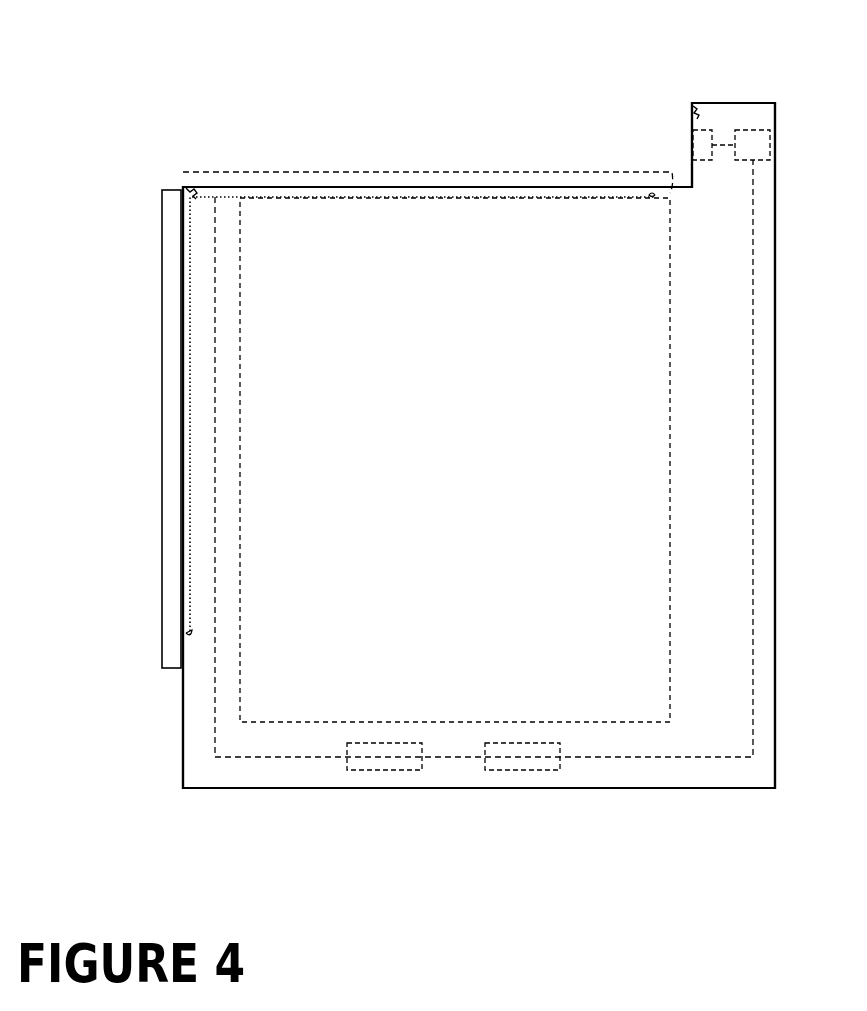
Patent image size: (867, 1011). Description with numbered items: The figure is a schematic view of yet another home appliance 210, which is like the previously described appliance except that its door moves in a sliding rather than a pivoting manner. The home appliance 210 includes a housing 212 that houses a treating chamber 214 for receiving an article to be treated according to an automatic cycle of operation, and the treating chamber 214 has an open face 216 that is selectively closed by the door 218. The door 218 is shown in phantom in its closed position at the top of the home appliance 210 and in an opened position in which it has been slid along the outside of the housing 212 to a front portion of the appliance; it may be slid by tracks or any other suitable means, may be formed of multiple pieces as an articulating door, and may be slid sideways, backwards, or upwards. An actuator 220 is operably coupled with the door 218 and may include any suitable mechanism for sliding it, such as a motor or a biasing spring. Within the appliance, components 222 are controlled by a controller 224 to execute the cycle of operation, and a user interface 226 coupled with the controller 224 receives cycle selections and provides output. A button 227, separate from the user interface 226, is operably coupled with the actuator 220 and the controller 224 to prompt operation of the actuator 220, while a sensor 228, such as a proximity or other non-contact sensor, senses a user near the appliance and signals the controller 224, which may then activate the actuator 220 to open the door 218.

The home appliance 210 is at (113, 64).
The housing 212 is at (182, 695).
The treating chamber 214 is at (500, 438).
The open face 216 is at (397, 186).
The door 218 is at (317, 178).
The actuator 220 is at (194, 200).
The components 222 is at (395, 772).
The controller 224 is at (757, 130).
The user interface 226 is at (706, 103).
The button 227 is at (694, 110).
The sensor 228 is at (184, 190).